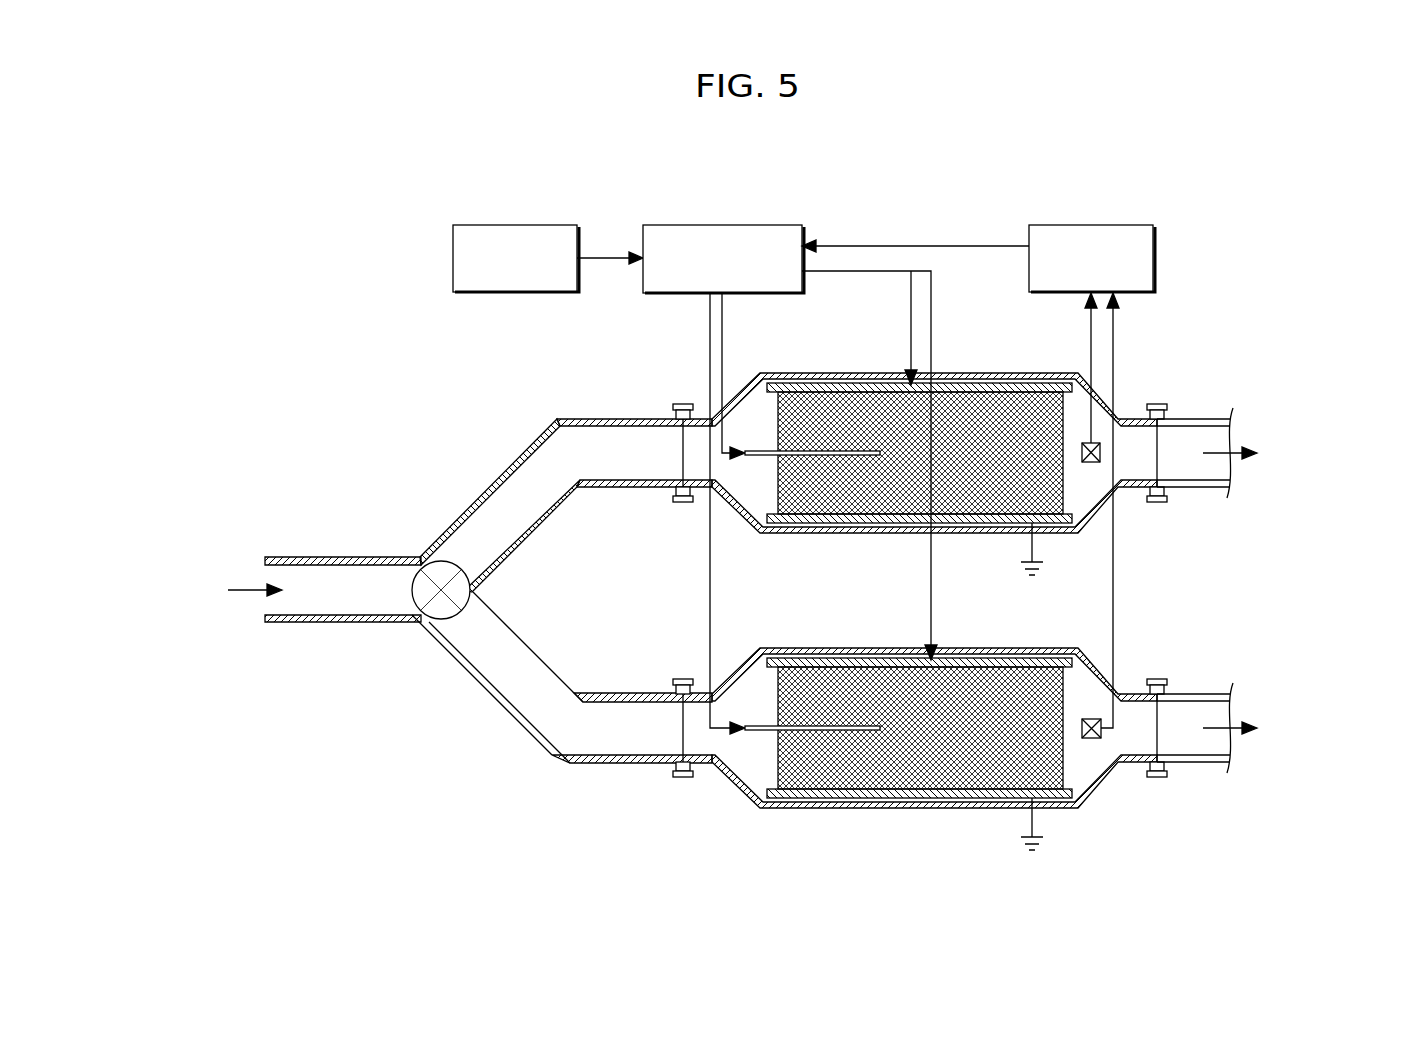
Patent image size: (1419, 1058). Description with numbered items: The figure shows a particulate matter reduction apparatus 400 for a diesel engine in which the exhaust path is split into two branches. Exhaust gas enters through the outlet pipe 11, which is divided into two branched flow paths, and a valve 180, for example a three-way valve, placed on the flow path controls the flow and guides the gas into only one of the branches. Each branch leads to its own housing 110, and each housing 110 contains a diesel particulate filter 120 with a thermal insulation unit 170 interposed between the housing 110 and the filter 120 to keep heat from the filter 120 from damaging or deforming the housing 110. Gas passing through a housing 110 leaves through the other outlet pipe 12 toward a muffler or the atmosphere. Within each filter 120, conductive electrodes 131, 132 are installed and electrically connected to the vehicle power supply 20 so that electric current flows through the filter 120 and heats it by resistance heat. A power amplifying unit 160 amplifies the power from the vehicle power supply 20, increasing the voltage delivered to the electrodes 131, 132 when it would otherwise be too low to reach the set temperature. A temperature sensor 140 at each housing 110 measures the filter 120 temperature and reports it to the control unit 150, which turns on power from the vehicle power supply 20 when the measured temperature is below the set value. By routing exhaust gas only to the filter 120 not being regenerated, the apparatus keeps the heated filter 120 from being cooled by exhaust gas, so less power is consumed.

The particulate matter reduction apparatus 400 is at (1197, 193).
The vehicle power supply 20 is at (532, 225).
The power amplifying unit 160 is at (736, 225).
The control unit 150 is at (1103, 225).
The valve 180 is at (418, 558).
The outlet pipe 11 is at (617, 488).
The outlet pipe 12 is at (1208, 484).
The housing 110 is at (895, 534).
The thermal insulation unit 170 is at (802, 526).
The diesel particulate filter 120 is at (1010, 505).
The electrode 131 is at (755, 468).
The electrode 132 is at (955, 392).
The temperature sensor 140 is at (1093, 464).